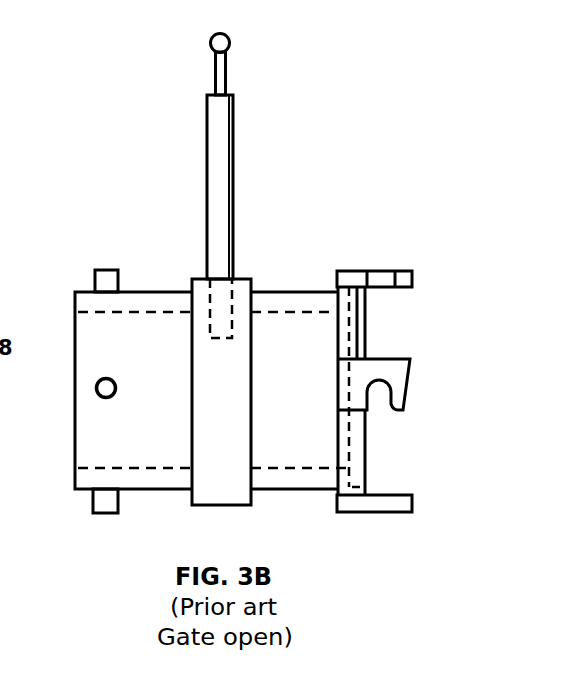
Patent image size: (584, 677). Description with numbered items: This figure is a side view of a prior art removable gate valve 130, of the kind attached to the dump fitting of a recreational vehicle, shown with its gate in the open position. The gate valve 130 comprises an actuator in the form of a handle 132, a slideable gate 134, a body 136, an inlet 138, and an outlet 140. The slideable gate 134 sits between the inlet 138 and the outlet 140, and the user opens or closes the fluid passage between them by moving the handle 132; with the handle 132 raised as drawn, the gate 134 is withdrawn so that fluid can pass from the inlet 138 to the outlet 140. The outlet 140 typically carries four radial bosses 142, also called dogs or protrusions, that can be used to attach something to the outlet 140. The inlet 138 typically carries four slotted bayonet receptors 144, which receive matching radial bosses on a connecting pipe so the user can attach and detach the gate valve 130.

The removable gate valve 130 is at (112, 72).
The handle 132 is at (222, 42).
The slideable gate 134 is at (233, 158).
The body 136 is at (200, 287).
The inlet 138 is at (368, 342).
The outlet 140 is at (75, 455).
The radial bosses 142 is at (108, 283).
The slotted bayonet receptors 144 is at (377, 270).